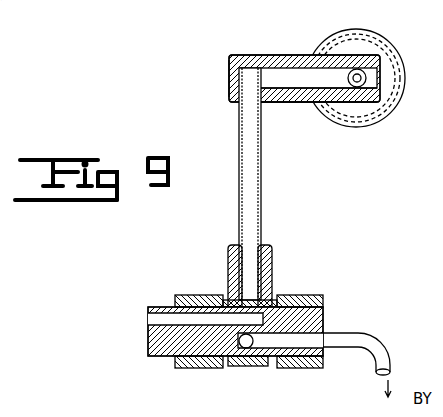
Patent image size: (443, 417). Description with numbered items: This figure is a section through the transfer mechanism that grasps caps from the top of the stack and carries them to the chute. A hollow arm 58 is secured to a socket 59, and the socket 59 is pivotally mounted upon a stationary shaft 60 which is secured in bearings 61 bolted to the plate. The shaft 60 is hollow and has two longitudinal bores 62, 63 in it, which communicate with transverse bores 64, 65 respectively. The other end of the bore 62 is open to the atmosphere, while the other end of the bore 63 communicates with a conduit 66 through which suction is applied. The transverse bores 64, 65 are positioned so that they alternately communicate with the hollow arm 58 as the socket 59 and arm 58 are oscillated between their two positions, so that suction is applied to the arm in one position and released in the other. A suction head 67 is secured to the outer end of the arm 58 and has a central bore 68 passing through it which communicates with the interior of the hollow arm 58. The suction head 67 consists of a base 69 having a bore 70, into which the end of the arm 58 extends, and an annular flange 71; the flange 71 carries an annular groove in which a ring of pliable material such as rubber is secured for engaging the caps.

The hollow arm 58 is at (262, 196).
The socket 59 is at (271, 268).
The stationary shaft 60 is at (323, 320).
The bearings 61 is at (190, 368).
The longitudinal bore 62 is at (196, 305).
The longitudinal bore 63 is at (295, 368).
The transverse bore 64 is at (268, 283).
The transverse bore 65 is at (249, 345).
The conduit 66 is at (393, 346).
The suction head 67 is at (292, 100).
The central bore 68 is at (358, 86).
The base 69 is at (283, 55).
The bore 70 is at (229, 92).
The annular flange 71 is at (401, 62).